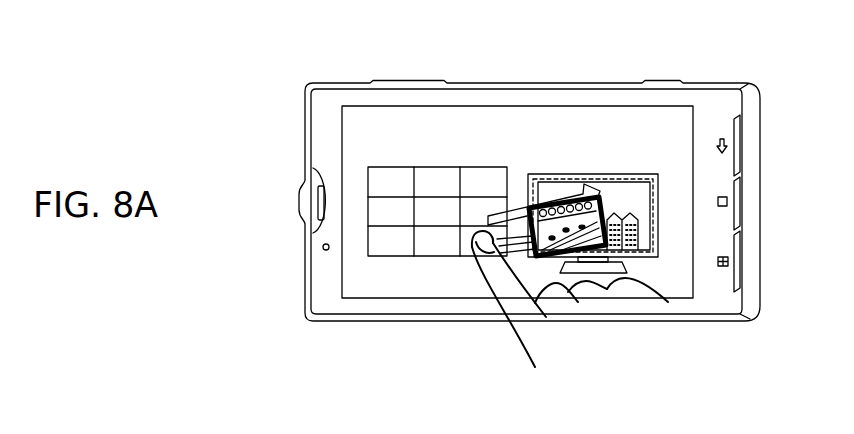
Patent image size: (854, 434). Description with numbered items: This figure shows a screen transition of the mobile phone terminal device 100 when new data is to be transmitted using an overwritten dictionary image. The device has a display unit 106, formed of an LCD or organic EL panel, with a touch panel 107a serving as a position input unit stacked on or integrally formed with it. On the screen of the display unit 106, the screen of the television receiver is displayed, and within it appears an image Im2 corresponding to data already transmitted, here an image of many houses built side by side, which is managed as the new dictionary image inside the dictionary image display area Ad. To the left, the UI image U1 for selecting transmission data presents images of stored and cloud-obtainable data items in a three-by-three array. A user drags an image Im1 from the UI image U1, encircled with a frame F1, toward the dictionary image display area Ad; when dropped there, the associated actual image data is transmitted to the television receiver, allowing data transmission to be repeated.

The mobile phone terminal device 100 is at (343, 74).
The touch panel 107a is at (342, 140).
The display unit 106 is at (460, 202).
The UI image for selecting transmission data U1 is at (394, 267).
The dictionary image display area Ad is at (552, 180).
The image Im1 is at (633, 197).
The frame F1 is at (579, 207).
The image Im2 is at (608, 243).